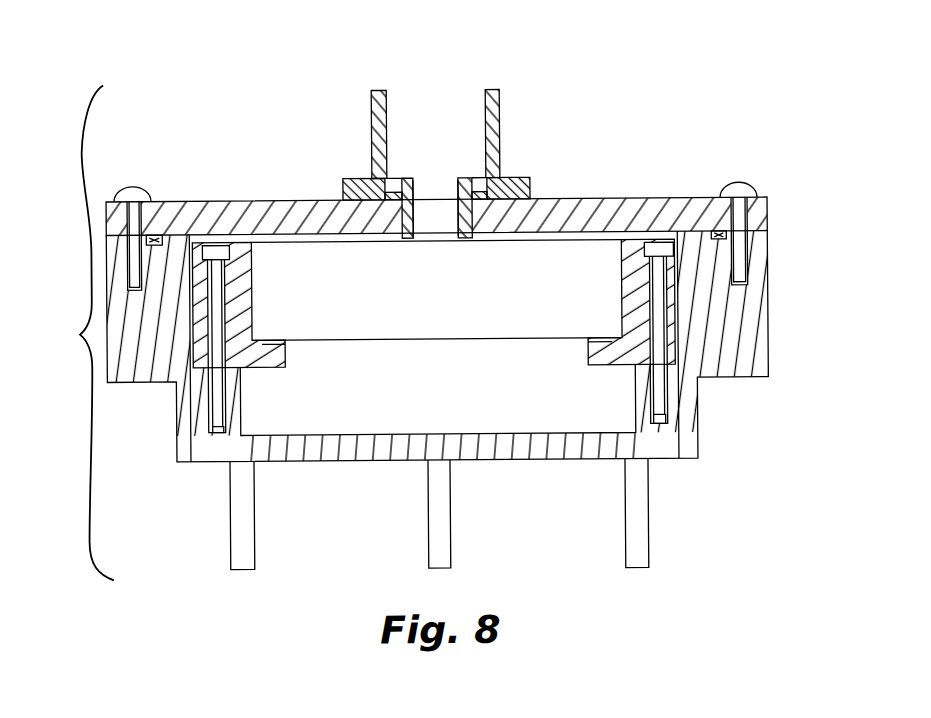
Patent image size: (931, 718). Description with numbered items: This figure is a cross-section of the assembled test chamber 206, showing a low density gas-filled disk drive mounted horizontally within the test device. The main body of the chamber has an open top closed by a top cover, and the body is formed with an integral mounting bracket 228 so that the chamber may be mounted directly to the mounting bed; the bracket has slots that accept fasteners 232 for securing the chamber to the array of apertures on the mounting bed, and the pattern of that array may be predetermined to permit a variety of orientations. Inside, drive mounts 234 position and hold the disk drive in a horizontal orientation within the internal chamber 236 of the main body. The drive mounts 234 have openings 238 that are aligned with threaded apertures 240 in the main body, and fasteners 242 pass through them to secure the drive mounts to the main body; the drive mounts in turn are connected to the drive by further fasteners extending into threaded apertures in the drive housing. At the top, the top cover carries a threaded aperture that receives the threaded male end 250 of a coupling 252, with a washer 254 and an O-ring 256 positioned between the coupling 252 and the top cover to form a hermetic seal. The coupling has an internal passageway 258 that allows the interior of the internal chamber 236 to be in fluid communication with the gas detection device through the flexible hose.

The test chamber 206 is at (71, 333).
The integral mounting bracket 228 is at (693, 442).
The fasteners 232 is at (247, 550).
The drive mounts 234 is at (203, 298).
The internal chamber 236 is at (320, 395).
The openings 238 is at (206, 250).
The threaded apertures 240 is at (219, 431).
The fasteners 242 is at (217, 393).
The threaded male end 250 is at (477, 217).
The coupling 252 is at (492, 100).
The washer 254 is at (358, 179).
The O-ring 256 is at (389, 197).
The internal passageway 258 is at (423, 128).